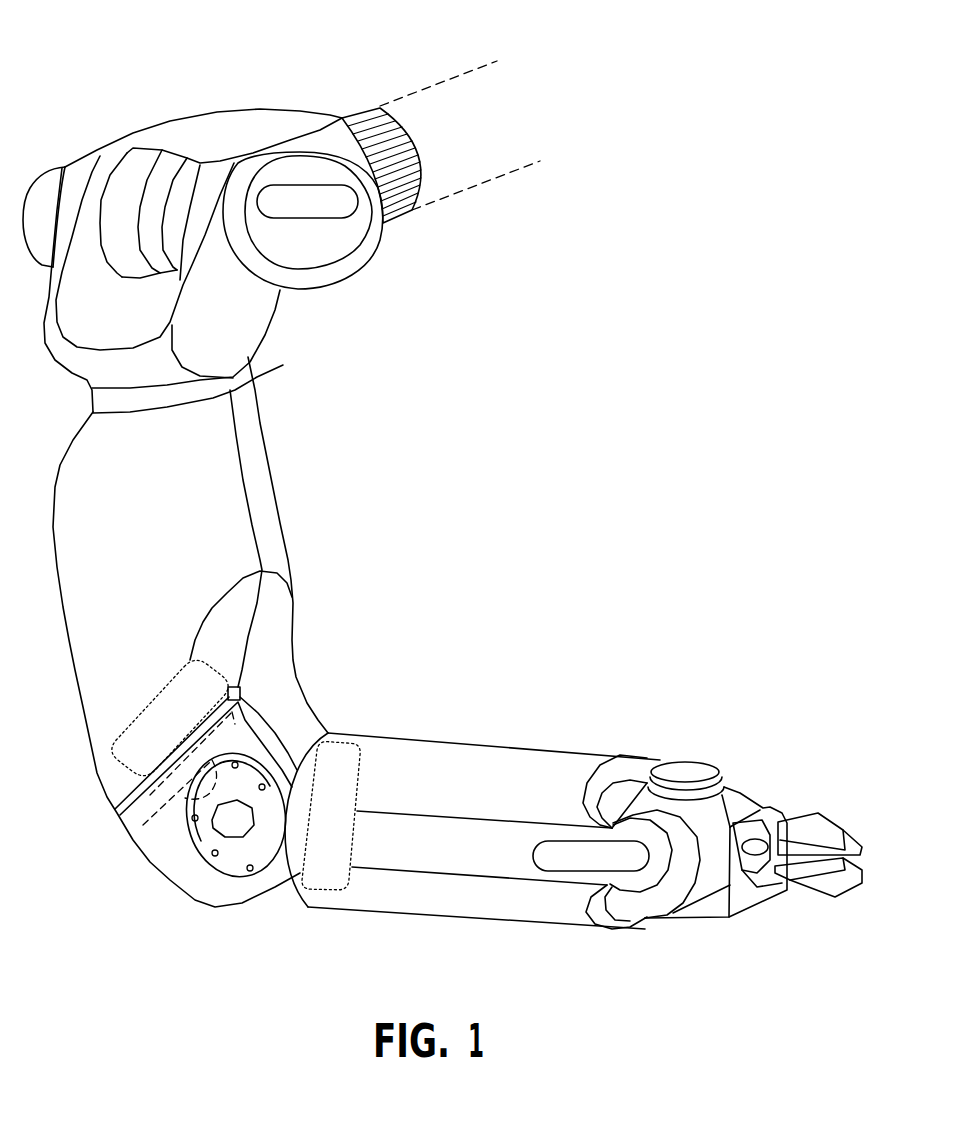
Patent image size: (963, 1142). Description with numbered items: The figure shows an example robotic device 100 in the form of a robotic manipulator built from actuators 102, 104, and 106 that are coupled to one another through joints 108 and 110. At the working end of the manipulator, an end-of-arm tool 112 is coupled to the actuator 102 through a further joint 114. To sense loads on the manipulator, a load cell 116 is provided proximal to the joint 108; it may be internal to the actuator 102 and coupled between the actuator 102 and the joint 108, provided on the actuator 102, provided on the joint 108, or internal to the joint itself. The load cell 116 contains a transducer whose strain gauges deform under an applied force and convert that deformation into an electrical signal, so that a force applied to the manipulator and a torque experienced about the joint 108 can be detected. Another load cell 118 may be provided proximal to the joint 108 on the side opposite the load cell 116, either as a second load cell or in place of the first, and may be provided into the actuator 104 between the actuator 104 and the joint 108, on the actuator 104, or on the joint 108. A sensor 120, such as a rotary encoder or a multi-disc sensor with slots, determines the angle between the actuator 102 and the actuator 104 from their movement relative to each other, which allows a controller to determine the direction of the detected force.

The robotic device 100 is at (132, 47).
The actuator 102 is at (462, 730).
The actuator 104 is at (286, 465).
The actuator 106 is at (492, 192).
The joint 108 is at (336, 676).
The joint 110 is at (363, 293).
The end-of-arm tool (EOAT) 112 is at (813, 790).
The joint 114 is at (717, 940).
The load cell 116 is at (305, 884).
The load cell 118 is at (113, 766).
The sensor 120 is at (146, 830).